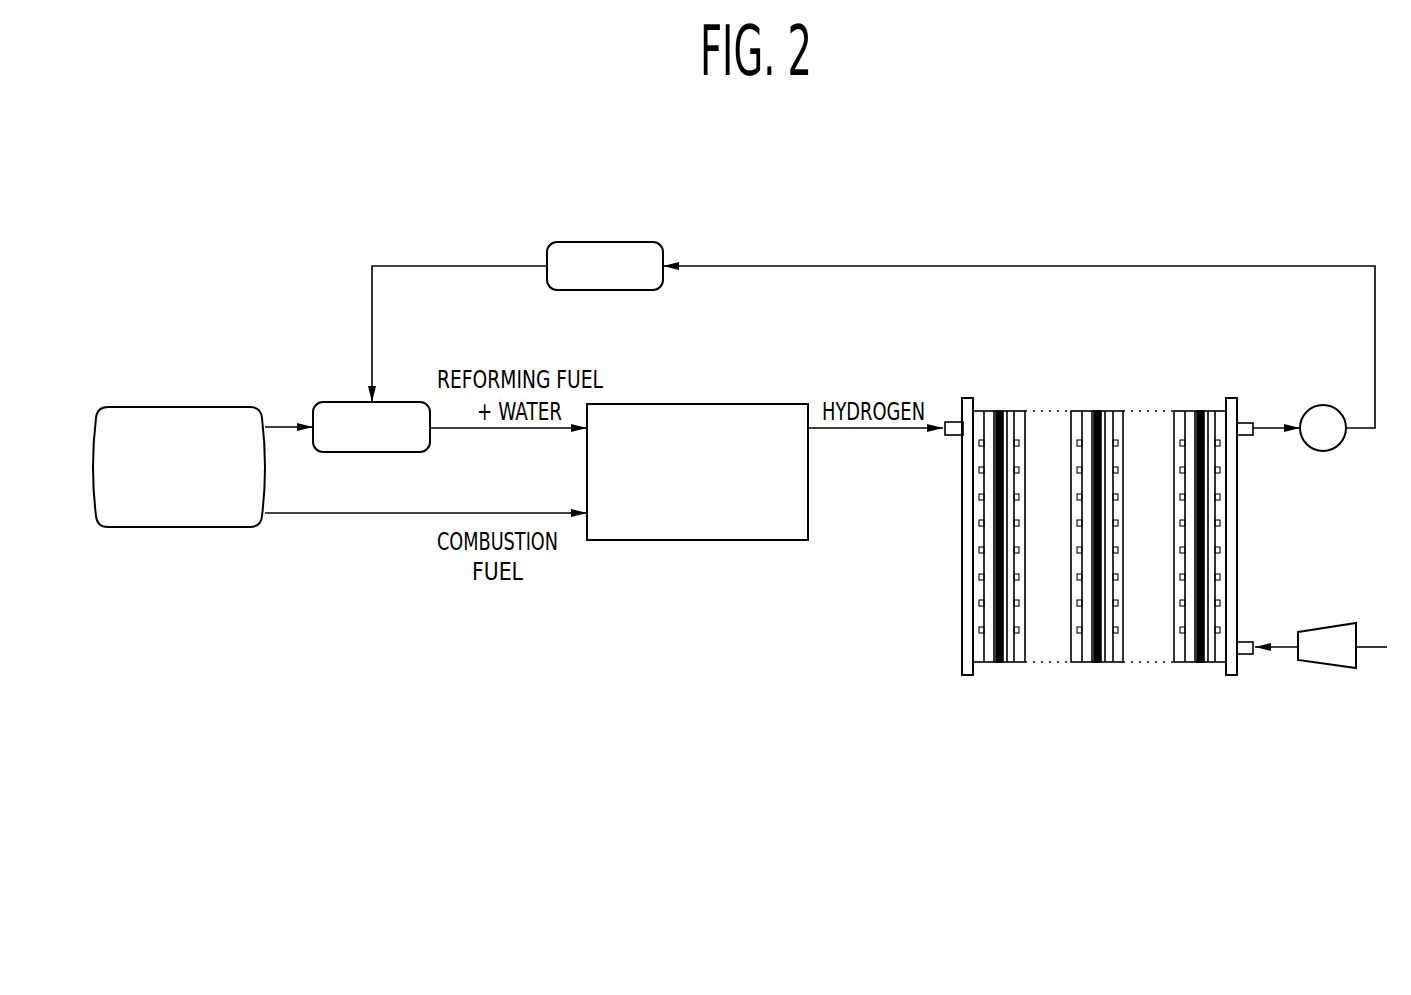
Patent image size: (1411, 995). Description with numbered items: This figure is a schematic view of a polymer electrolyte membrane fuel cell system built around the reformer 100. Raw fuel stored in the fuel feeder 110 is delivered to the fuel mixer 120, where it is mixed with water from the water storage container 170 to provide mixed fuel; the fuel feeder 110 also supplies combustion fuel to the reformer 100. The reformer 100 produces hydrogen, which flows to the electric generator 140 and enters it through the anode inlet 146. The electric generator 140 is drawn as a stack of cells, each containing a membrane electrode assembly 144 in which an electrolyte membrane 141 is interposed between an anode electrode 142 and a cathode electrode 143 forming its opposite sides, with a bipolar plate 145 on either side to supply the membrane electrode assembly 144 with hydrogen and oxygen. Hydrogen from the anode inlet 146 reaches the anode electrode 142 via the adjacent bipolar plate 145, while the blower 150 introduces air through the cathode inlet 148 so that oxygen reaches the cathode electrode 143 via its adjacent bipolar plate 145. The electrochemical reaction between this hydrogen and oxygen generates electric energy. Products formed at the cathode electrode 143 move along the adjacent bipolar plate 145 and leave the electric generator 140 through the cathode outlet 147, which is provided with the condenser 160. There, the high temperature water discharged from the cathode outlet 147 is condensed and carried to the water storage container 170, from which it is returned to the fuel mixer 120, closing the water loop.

The reformer 100 is at (712, 558).
The fuel feeder 110 is at (178, 527).
The fuel mixer 120 is at (397, 406).
The electric generator 140 is at (1103, 545).
The electrolyte membrane 141 is at (1097, 662).
The anode electrode 142 is at (1086, 662).
The cathode electrode 143 is at (1108, 662).
The membrane electrode assembly 144 is at (1105, 600).
The bipolar plate 145 is at (1074, 662).
The anode inlet 146 is at (952, 422).
The cathode outlet 147 is at (1245, 423).
The cathode inlet 148 is at (1245, 642).
The blower 150 is at (1330, 665).
The condenser 160 is at (1327, 447).
The water storage container 170 is at (603, 242).